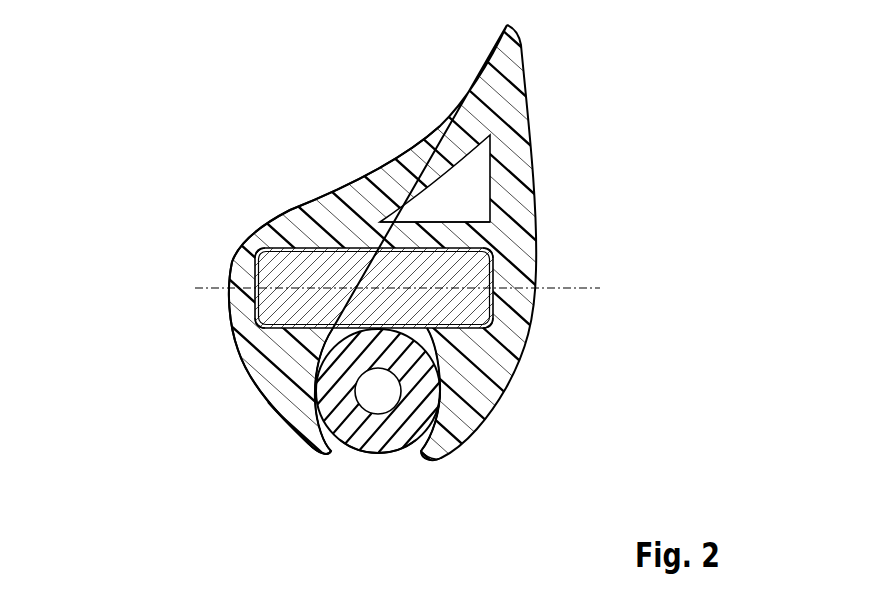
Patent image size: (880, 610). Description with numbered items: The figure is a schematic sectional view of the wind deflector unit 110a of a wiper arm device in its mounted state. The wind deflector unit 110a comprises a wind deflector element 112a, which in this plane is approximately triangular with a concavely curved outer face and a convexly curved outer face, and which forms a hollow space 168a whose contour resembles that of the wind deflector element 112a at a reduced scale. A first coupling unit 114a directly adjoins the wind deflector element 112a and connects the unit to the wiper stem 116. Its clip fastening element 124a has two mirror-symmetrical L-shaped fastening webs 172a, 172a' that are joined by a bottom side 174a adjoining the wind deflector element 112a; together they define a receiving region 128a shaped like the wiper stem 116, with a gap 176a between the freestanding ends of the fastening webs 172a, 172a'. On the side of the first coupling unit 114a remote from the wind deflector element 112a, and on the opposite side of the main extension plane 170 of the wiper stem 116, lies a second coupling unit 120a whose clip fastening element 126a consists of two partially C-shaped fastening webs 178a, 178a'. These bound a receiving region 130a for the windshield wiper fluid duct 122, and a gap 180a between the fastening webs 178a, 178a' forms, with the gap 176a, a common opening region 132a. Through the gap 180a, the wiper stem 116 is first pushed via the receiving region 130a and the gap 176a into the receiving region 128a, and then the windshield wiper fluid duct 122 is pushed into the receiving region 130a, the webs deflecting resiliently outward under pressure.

The wind deflector unit 110a is at (172, 111).
The wind deflector element 112a is at (506, 131).
The first coupling unit 114a is at (215, 277).
The wiper stem 116 is at (310, 272).
The second coupling unit 120a is at (254, 416).
The windshield wiper fluid duct 122 is at (420, 392).
The clip fastening element 124a is at (237, 310).
The clip fastening element 126a is at (300, 393).
The receiving region 128a is at (480, 240).
The receiving region 130a is at (430, 369).
The common opening region 132a is at (355, 468).
The hollow space 168a is at (460, 192).
The main extension plane 170 is at (593, 286).
The fastening web 172a is at (199, 259).
The fastening web 172a' is at (563, 293).
The bottom side 174a is at (353, 240).
The gap 176a is at (332, 334).
The fastening web 178a is at (287, 456).
The fastening web 178a' is at (479, 440).
The gap 180a is at (381, 456).